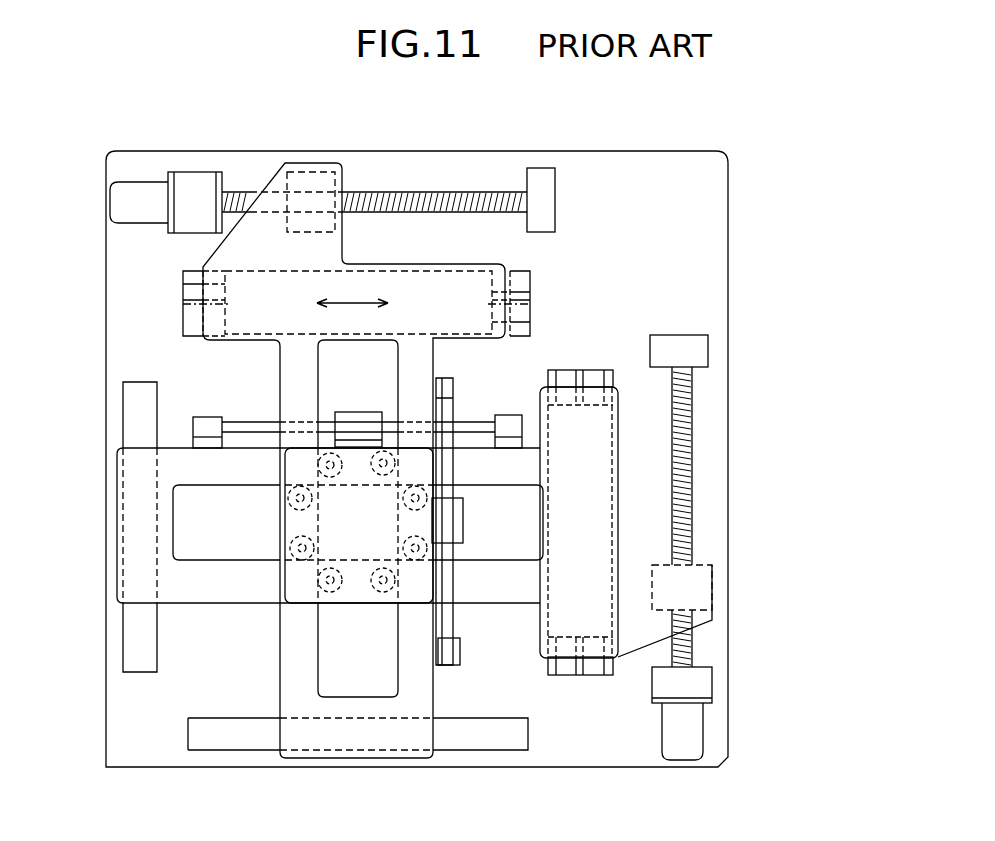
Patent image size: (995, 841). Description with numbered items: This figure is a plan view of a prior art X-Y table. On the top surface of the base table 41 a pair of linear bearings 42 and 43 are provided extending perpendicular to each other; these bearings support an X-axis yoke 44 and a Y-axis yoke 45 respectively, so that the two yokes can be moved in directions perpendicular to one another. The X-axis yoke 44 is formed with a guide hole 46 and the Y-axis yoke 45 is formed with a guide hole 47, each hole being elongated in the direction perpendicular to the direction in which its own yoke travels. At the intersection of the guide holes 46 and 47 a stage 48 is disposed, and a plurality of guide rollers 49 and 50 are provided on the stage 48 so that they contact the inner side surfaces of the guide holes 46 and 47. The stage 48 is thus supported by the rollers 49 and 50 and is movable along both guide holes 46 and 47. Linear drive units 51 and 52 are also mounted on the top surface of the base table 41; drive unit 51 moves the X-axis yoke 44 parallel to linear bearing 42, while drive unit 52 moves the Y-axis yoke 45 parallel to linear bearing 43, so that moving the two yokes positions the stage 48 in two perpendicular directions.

The base table 41 is at (602, 170).
The linear bearing 42 is at (523, 288).
The linear bearing 43 is at (137, 405).
The X-axis yoke 44 is at (232, 303).
The Y-axis yoke 45 is at (192, 595).
The guide hole 46 is at (388, 345).
The guide hole 47 is at (177, 562).
The stage 48 is at (417, 583).
The guide rollers 49 is at (340, 455).
The guide rollers 50 is at (295, 568).
The linear drive unit 51 is at (206, 173).
The linear drive unit 52 is at (695, 512).